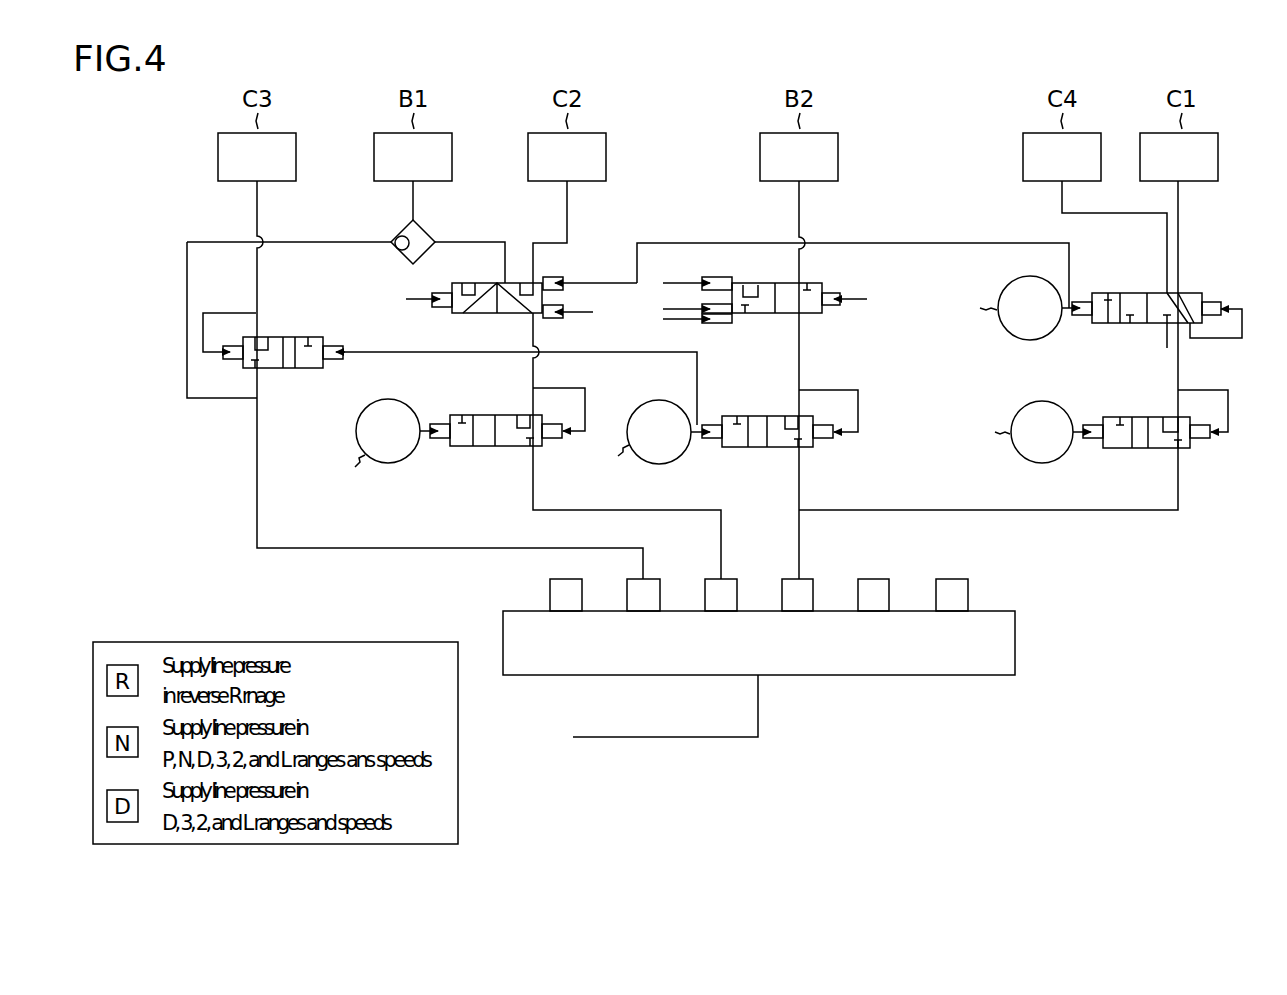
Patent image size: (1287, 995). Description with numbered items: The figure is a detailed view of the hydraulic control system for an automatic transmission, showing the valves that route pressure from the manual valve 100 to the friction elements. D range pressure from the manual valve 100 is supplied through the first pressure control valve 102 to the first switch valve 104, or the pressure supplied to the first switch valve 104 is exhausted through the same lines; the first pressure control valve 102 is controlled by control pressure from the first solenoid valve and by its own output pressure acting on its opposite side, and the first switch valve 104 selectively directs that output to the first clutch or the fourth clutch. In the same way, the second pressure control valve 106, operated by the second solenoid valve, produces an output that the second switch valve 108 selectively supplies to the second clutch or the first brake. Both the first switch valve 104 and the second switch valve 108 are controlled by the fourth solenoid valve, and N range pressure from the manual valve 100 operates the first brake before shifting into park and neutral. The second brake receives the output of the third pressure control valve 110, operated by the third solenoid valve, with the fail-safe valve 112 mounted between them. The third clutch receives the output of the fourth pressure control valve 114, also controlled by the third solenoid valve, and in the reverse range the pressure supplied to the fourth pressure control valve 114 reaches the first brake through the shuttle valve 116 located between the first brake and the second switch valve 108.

The manual valve 100 is at (1015, 640).
The first pressure control valve 102 is at (1183, 460).
The first switch valve 104 is at (1193, 278).
The second pressure control valve 106 is at (447, 460).
The second switch valve 108 is at (550, 273).
The third pressure control valve 110 is at (730, 455).
The fail-safe valve 112 is at (817, 282).
The fourth pressure control valve 114 is at (282, 333).
The shuttle valve 116 is at (392, 266).